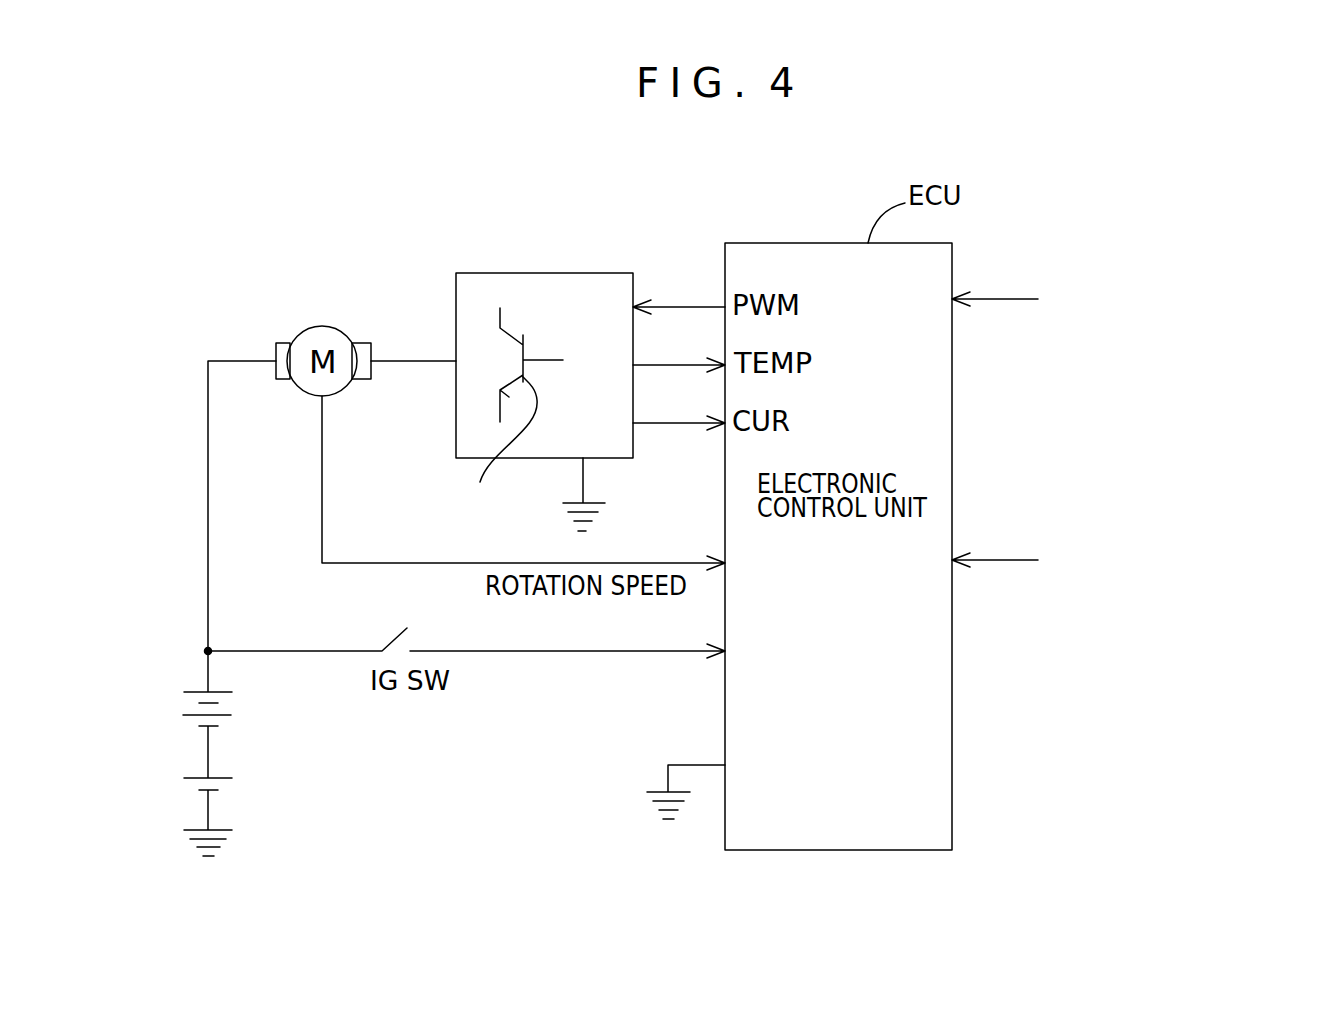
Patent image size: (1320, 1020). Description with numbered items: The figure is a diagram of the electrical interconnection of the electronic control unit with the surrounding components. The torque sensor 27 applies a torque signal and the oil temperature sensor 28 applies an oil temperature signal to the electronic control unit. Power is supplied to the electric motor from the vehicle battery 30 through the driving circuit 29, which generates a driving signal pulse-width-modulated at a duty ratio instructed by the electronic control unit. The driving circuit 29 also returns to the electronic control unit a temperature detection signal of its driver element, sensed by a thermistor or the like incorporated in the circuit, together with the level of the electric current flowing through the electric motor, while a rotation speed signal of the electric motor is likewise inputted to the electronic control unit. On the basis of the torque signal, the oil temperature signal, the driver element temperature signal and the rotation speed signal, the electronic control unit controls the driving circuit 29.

The torque sensor 27 is at (1121, 297).
The oil temperature sensor 28 is at (1132, 570).
The driving circuit 29 is at (533, 273).
The battery 30 is at (225, 715).